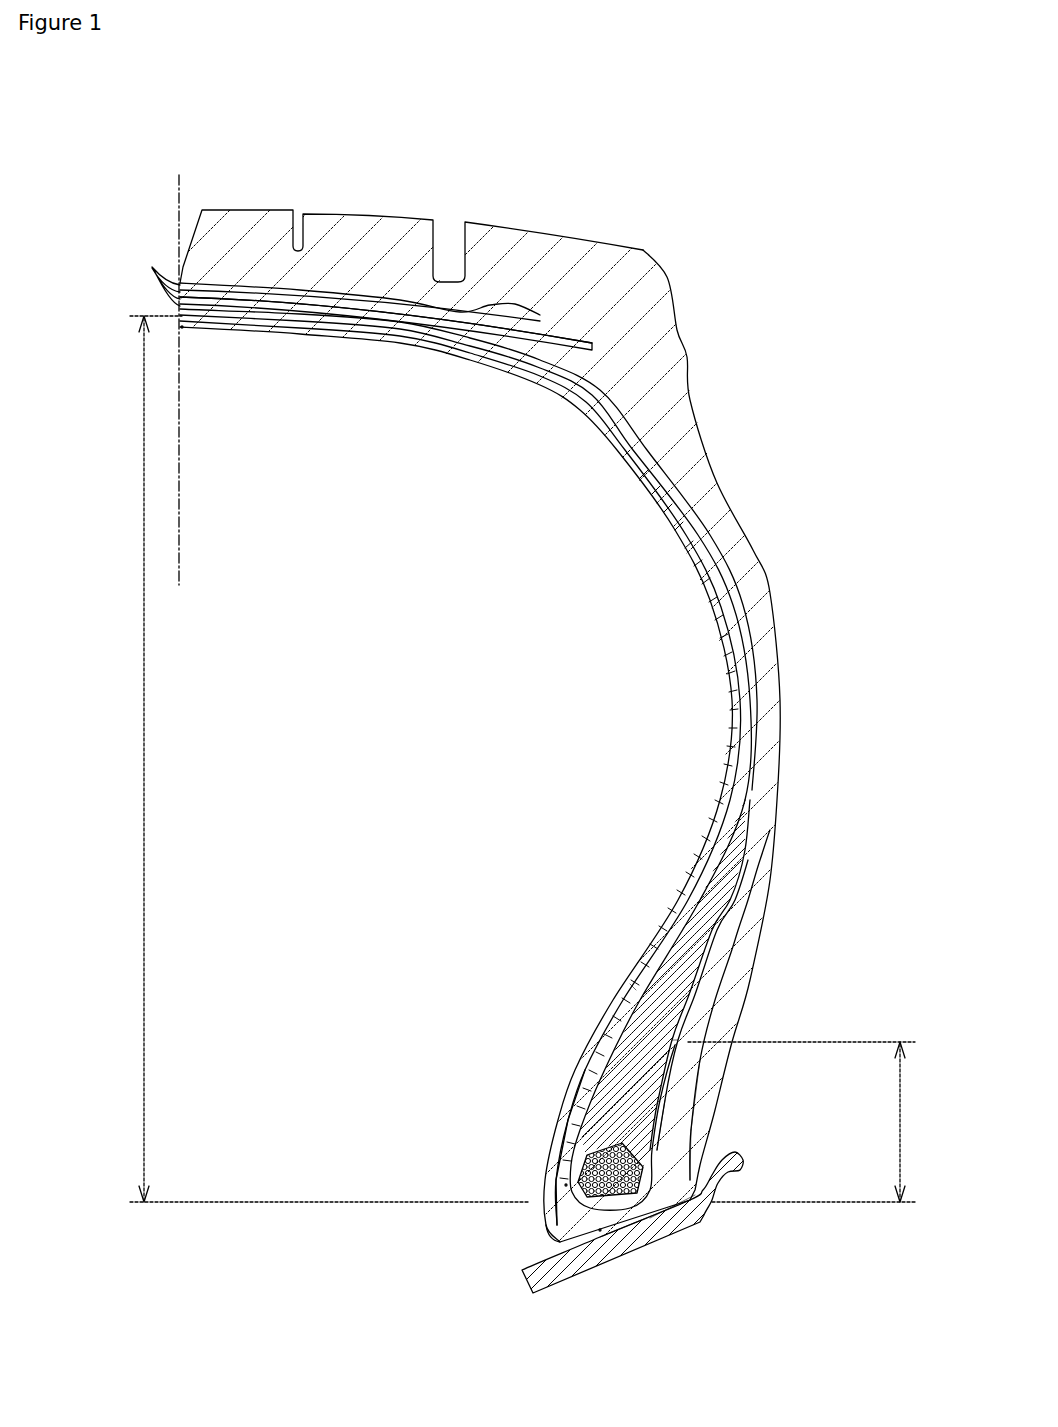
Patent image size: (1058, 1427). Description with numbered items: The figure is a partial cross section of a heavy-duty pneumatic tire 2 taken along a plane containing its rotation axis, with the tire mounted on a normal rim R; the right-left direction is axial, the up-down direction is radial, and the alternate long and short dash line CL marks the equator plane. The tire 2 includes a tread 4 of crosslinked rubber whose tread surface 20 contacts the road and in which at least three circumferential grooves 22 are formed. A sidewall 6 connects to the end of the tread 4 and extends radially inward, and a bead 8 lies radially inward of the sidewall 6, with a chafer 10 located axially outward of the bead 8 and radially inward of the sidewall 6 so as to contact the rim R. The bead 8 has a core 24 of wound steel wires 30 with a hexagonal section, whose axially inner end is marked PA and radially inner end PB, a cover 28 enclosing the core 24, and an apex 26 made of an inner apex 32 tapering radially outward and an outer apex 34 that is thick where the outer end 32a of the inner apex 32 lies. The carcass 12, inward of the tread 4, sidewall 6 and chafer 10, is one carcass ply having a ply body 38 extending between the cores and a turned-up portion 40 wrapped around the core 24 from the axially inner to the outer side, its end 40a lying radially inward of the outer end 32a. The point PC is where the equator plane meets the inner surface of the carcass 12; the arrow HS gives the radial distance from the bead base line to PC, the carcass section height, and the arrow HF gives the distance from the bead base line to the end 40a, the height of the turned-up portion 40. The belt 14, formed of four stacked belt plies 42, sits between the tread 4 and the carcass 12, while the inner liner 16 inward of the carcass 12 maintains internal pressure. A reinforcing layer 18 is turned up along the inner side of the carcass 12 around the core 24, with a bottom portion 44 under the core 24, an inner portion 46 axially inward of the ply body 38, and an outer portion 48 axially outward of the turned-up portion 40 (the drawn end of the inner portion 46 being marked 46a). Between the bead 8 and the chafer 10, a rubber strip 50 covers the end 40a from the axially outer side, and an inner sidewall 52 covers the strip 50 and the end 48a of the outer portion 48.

The heavy-duty pneumatic tire 2 is at (742, 240).
The tread 4 is at (395, 235).
The sidewall 6 is at (758, 632).
The bead 8 is at (594, 1064).
The chafer 10 is at (712, 1092).
The carcass 12 is at (345, 330).
The belt 14 is at (248, 283).
The inner liner 16 is at (536, 393).
The reinforcing layer 18 is at (692, 1128).
The tread surface 20 is at (330, 213).
The circumferential groove 22 is at (192, 222).
The core 24 is at (575, 1150).
The apex 26 is at (522, 908).
The cover 28 is at (558, 1218).
The wire 30 is at (644, 1235).
The inner apex 32 is at (596, 1062).
The outer end of the inner apex 32a is at (630, 984).
The outer apex 34 is at (685, 950).
The ply body 38 is at (652, 478).
The turned-up portion 40 is at (690, 1058).
The end of the turned-up portion 40a is at (686, 1032).
The belt ply 42 is at (152, 268).
The bottom portion 44 is at (654, 1222).
The inner portion 46 is at (572, 1112).
The filler strip end 46a is at (578, 1082).
The outer portion 48 is at (664, 1118).
The end of the outer portion 48a is at (702, 1080).
The strip 50 is at (704, 986).
The inner sidewall 52 is at (722, 912).
The equator plane CL is at (185, 566).
The intersection point PC is at (210, 330).
The axially inner end of the core PA is at (565, 1182).
The radially inner end of the core PB is at (600, 1230).
The carcass cross-section height HS is at (317, 759).
The turned-up portion height HF is at (812, 1122).
The rim R is at (693, 1218).